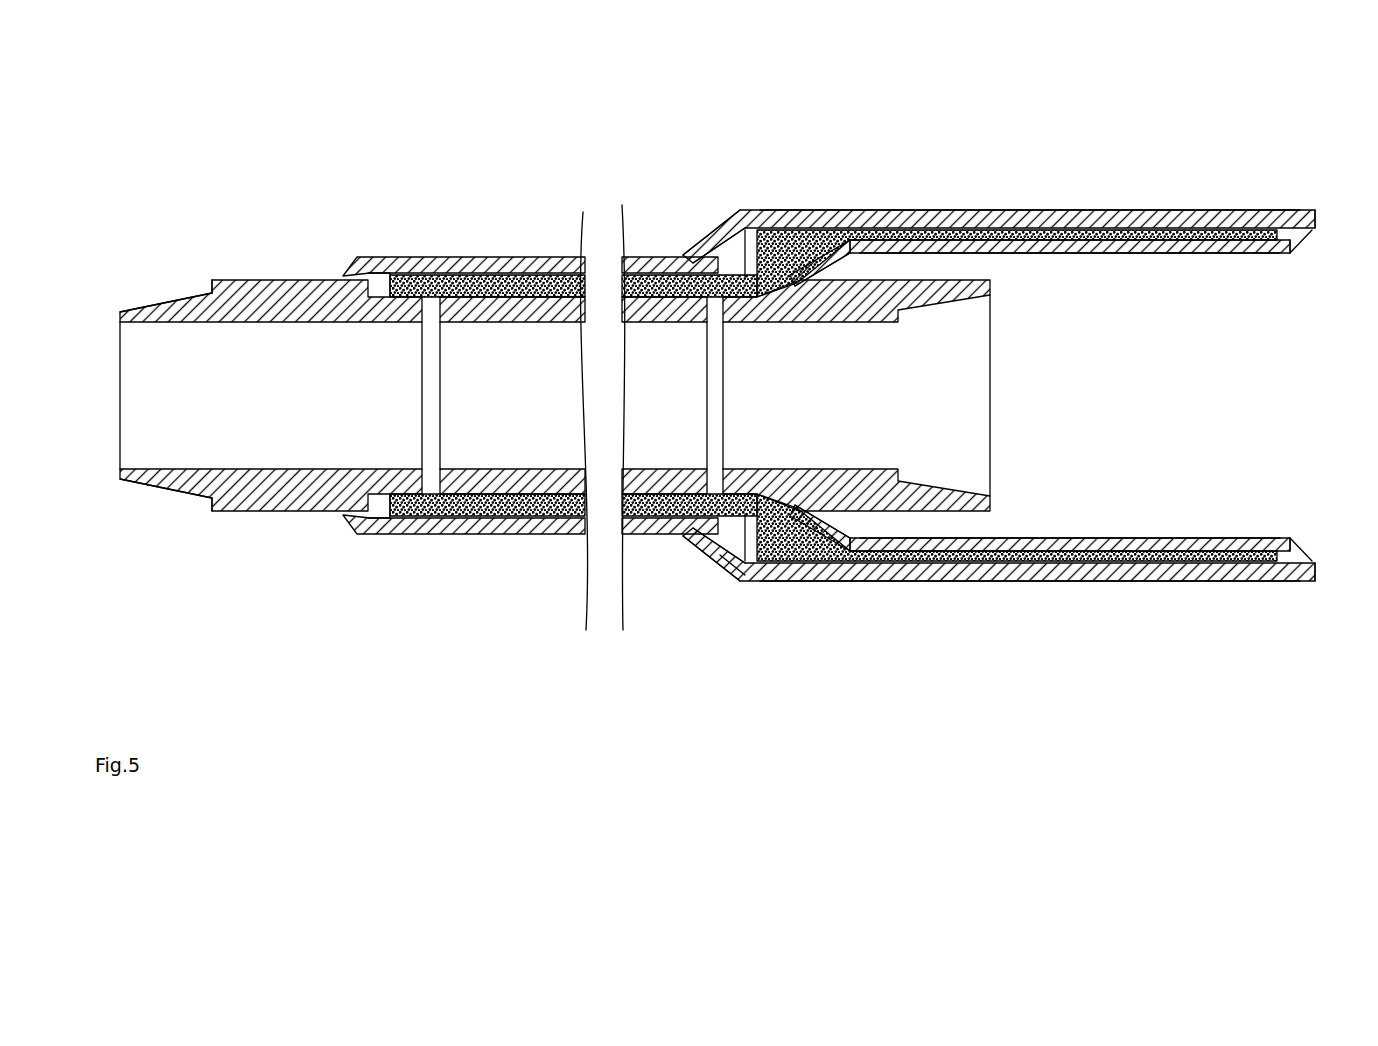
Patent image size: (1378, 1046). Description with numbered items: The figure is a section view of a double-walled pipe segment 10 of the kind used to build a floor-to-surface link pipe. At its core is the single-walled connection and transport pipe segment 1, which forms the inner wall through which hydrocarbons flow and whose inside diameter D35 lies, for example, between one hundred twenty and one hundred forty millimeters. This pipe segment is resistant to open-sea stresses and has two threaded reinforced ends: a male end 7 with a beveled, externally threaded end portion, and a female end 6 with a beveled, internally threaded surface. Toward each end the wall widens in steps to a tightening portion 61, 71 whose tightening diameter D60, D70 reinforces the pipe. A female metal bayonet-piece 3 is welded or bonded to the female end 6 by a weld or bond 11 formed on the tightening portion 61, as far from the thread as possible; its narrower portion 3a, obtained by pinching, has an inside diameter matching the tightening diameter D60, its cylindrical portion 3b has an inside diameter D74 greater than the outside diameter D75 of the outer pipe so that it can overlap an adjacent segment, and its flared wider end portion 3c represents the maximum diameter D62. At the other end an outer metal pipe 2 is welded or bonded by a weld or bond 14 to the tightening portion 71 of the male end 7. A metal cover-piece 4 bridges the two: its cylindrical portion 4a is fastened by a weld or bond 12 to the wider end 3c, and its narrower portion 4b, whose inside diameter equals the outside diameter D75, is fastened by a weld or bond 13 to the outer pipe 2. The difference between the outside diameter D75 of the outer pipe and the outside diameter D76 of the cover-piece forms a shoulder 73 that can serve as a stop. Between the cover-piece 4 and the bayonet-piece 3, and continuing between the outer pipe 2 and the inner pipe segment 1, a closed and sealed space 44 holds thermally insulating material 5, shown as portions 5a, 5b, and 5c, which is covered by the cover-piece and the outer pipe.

The single-walled connection and transport pipe segment 1 is at (181, 284).
The outer metal pipe 2 is at (637, 255).
The female metal bayonet-piece 3 is at (1160, 256).
The narrower portion of the female bayonet-piece 3a is at (830, 265).
The cylindrical portion of the female bayonet-piece 3b is at (1096, 254).
The wider end portion of the female bayonet-piece 3c is at (1302, 268).
The metal cover-piece 4 is at (1148, 211).
The cylindrical portion of the cover-piece 4a is at (1027, 196).
The narrower portion of the cover-piece 4b is at (723, 218).
The thermally insulating material 5 is at (999, 547).
The thermally insulating material 5a is at (480, 536).
The thermally insulating material 5b is at (786, 595).
The thermally insulating material 5c is at (1160, 582).
The threaded reinforced end 6 is at (980, 312).
The threaded reinforced end 7 is at (193, 519).
The double-walled pipe segment 10 is at (157, 103).
The weld or bond 11 is at (797, 275).
The weld or bond 12 is at (1262, 210).
The weld or bond 13 is at (690, 247).
The weld or bond 14 is at (350, 272).
The space for the insulating material 44 is at (380, 522).
The tightening portion 61 is at (866, 513).
The tightening portion 71 is at (250, 512).
The shoulder 73 is at (692, 570).
The inside diameter of the transport inner wall D35 is at (535, 322).
The tightening diameter D60 is at (930, 270).
The maximum diameter of the female bayonet-piece D62 is at (1352, 205).
The tightening diameter D70 is at (301, 266).
The inside diameter of the cylindrical portion of the female bayonet-piece D74 is at (1197, 245).
The outside diameter of the outer pipe D75 is at (405, 245).
The outside diameter of the cover-piece D76 is at (1238, 190).